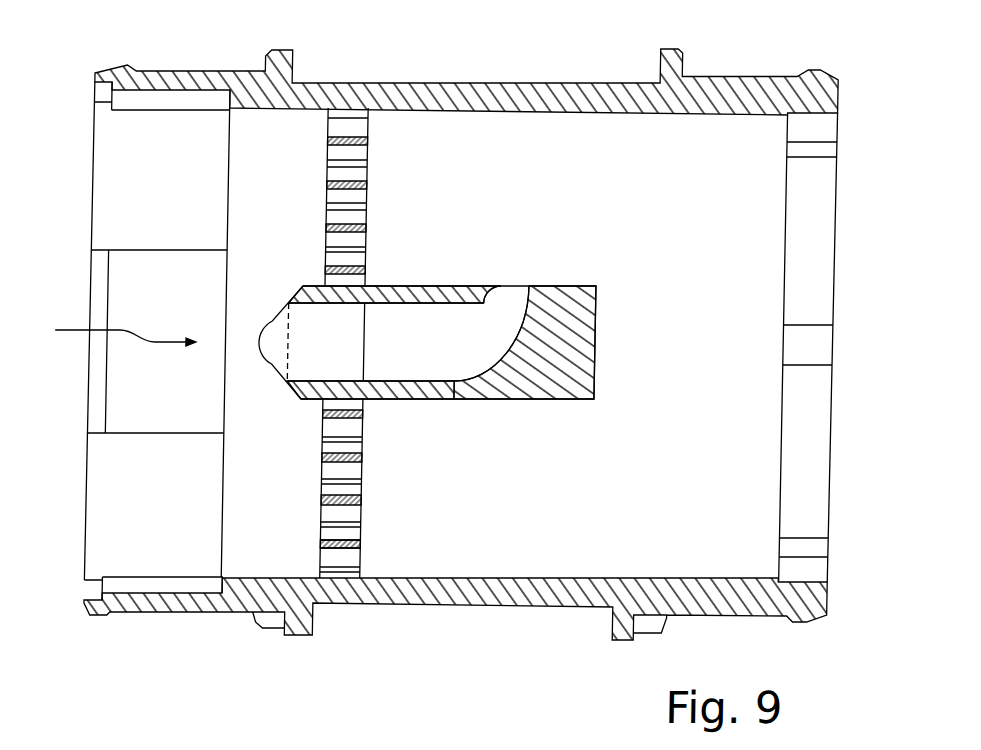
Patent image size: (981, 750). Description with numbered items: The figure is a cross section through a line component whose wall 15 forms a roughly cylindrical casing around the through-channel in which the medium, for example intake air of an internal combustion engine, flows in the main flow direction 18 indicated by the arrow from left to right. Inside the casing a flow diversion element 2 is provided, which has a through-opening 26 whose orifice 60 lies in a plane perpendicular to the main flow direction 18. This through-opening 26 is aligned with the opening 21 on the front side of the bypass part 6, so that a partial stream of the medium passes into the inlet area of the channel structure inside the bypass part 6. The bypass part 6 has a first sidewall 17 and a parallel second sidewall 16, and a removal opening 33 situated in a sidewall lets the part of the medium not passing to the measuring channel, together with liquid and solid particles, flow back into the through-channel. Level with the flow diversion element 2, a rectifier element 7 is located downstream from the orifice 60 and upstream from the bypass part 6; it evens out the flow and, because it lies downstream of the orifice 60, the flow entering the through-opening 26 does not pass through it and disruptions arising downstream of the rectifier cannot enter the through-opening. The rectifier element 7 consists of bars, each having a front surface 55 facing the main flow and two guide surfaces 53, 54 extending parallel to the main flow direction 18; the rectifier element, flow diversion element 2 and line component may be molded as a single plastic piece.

The wall 15 is at (325, 92).
The rectifier element 7 is at (350, 172).
The flow diversion element 2 is at (300, 302).
The orifice 60 is at (287, 325).
The opening 21 is at (373, 337).
The second sidewall 16 is at (420, 283).
The removal opening 33 is at (510, 285).
The bypass part 6 is at (480, 387).
The first sidewall 17 is at (407, 400).
The through-opening 26 is at (307, 360).
The front surface 55 is at (328, 545).
The guide surface 53 is at (347, 543).
The guide surface 54 is at (347, 549).
The main flow direction 18 is at (108, 327).